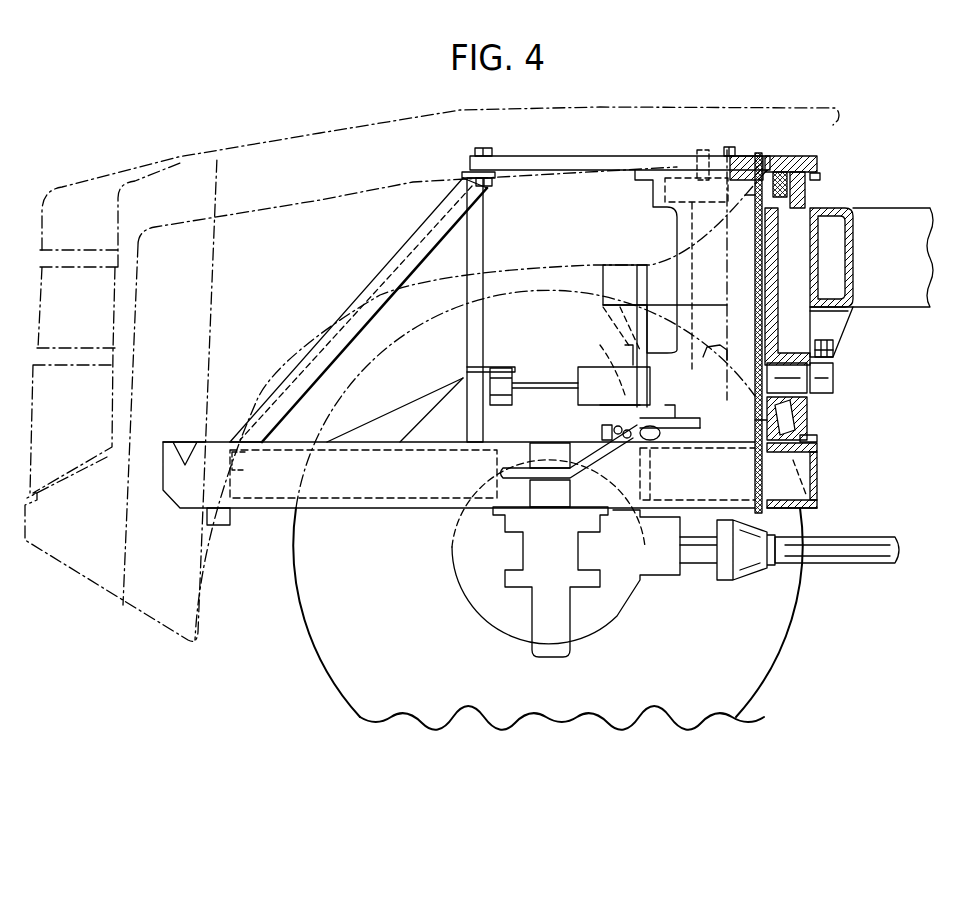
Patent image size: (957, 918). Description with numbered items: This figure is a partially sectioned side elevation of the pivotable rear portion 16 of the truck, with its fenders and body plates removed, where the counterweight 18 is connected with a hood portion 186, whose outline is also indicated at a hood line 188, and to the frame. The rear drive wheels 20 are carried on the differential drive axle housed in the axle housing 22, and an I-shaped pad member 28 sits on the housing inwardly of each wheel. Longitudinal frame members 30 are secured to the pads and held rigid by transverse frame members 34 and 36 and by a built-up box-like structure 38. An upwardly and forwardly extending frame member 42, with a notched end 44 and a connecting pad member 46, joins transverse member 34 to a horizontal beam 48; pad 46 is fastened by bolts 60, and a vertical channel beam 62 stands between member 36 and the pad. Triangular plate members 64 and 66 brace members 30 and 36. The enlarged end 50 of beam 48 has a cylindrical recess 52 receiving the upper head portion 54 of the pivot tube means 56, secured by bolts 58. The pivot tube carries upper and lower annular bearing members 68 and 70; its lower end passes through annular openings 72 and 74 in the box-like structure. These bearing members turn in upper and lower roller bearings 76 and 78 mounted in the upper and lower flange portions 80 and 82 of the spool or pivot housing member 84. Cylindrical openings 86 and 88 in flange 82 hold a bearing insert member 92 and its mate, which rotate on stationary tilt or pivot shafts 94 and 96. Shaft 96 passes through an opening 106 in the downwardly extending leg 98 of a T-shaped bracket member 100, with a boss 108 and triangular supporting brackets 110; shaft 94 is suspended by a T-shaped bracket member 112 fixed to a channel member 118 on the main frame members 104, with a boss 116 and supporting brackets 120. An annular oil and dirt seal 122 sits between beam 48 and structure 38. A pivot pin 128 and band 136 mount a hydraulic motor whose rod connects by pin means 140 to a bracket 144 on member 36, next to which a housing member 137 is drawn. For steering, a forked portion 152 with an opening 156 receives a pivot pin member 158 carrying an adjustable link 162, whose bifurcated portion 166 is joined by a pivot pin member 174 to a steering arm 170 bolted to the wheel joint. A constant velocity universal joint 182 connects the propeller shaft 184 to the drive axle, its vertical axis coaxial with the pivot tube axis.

The rear portion of the truck 16 is at (177, 150).
The counterweight 18 is at (47, 200).
The rear drive wheels 20 is at (313, 613).
The differential drive axle housing 22 is at (460, 542).
The I-shaped pad member 28 is at (587, 520).
The longitudinally extending frame members 30 is at (265, 508).
The transversely extending frame member 34 is at (217, 518).
The transversely extending frame member 36 is at (473, 420).
The box-like structure 38 is at (807, 508).
The upwardly and forwardly extending frame member 42 is at (373, 277).
The notched end 44 is at (250, 465).
The connecting pad member 46 is at (461, 171).
The horizontally extending beam 48 is at (530, 158).
The enlarged end 50 is at (813, 157).
The cylindrical recess 52 is at (712, 168).
The upper head portion 54 is at (740, 153).
The pivot tube means 56 is at (753, 193).
The bolts 58 is at (763, 157).
The bolts 60 is at (481, 148).
The vertical channel beam 62 is at (480, 232).
The triangular shaped plate members 64 is at (388, 413).
The triangular shaped plate members 66 is at (433, 398).
The annular bearing member 68 is at (767, 173).
The annular bearing member 70 is at (760, 427).
The annular opening 72 is at (772, 452).
The annular opening 74 is at (777, 508).
The upper roller bearing 76 is at (785, 167).
The lower roller bearing 78 is at (800, 420).
The upper flange portion 80 is at (807, 192).
The lower flange portion 82 is at (807, 430).
The spool or pivot housing member 84 is at (772, 243).
The cylindrical opening 86 is at (833, 343).
The cylindrical opening 88 is at (638, 328).
The cylindrical bearing insert member 92 is at (727, 347).
The tilt or pivot shaft 94 is at (833, 385).
The tilt or pivot shaft 96 is at (602, 363).
The downwardly extending leg 98 is at (653, 417).
The T-shaped bracket member 100 is at (643, 320).
The longitudinally extending main frame members 104 is at (620, 270).
The opening 106 is at (637, 323).
The boss 108 is at (627, 347).
The supporting brackets 110 is at (617, 343).
The T-shaped bracket member 112 is at (815, 312).
The boss 116 is at (828, 356).
The channel member 118 is at (848, 253).
The triangular shaped supporting brackets 120 is at (833, 327).
The annular oil and dirt seal 122 is at (818, 173).
The pivot pin 128 is at (720, 347).
The band 136 is at (733, 380).
The actuator box 137 is at (580, 373).
The pin means 140 is at (503, 367).
The bracket 144 is at (493, 380).
The forked portion 152 is at (602, 433).
The opening 156 is at (605, 427).
The pivot pin member 158 is at (604, 432).
The adjustable link 162 is at (633, 430).
The bifurcated portion 166 is at (660, 433).
The steering arm 170 is at (597, 455).
The pivot pin member 174 is at (651, 441).
The constant velocity universal joint 182 is at (733, 573).
The propeller shaft 184 is at (847, 557).
The hood portion 186 is at (248, 157).
The hood line 188 is at (273, 256).